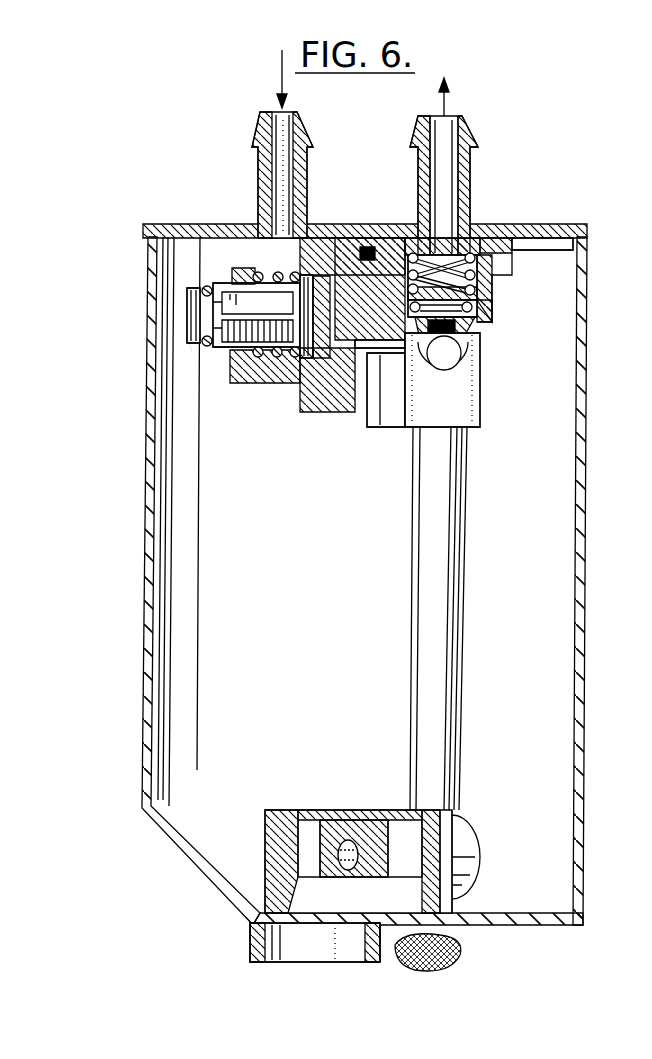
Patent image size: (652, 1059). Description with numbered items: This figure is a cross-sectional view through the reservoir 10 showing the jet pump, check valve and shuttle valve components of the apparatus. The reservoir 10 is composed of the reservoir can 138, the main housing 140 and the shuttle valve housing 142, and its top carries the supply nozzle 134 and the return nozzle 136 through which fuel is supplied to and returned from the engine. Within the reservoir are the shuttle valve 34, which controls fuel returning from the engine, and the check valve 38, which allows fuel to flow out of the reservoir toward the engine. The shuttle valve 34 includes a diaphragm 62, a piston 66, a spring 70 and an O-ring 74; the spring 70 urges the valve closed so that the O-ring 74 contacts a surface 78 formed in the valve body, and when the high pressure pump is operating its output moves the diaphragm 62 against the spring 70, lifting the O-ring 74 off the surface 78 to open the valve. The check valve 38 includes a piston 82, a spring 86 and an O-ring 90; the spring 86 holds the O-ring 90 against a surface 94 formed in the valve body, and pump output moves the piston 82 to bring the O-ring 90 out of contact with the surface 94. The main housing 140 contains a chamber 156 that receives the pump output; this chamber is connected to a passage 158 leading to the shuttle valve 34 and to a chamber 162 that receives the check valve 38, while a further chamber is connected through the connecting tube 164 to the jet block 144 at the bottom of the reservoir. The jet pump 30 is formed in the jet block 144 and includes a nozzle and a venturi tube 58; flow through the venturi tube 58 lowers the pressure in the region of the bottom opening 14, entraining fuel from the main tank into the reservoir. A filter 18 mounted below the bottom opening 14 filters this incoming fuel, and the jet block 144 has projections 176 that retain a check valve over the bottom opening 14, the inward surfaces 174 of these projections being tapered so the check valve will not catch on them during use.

The reservoir 10 is at (122, 754).
The bottom opening 14 is at (320, 918).
The filter 18 is at (455, 945).
The jet pump 30 is at (332, 834).
The shuttle valve 34 is at (178, 347).
The check valve 38 is at (552, 256).
The venturi tube 58 is at (350, 838).
The diaphragm 62 is at (330, 372).
The piston 66 is at (190, 302).
The spring 70 is at (262, 372).
The O-ring 74 is at (205, 289).
The surface 78 is at (242, 284).
The piston 82 is at (468, 338).
The spring 86 is at (475, 287).
The O-ring 90 is at (410, 322).
The surface 94 is at (483, 318).
The supply nozzle 134 is at (466, 164).
The return nozzle 136 is at (308, 164).
The reservoir can 138 is at (581, 702).
The main housing 140 is at (526, 241).
The shuttle valve housing 142 is at (174, 228).
The jet block 144 is at (286, 812).
The chamber 156 is at (447, 358).
The passage 158 is at (373, 360).
The chamber 162 is at (480, 310).
The connecting tube 164 is at (450, 576).
The inward surfaces 174 is at (295, 885).
The projections 176 is at (287, 875).